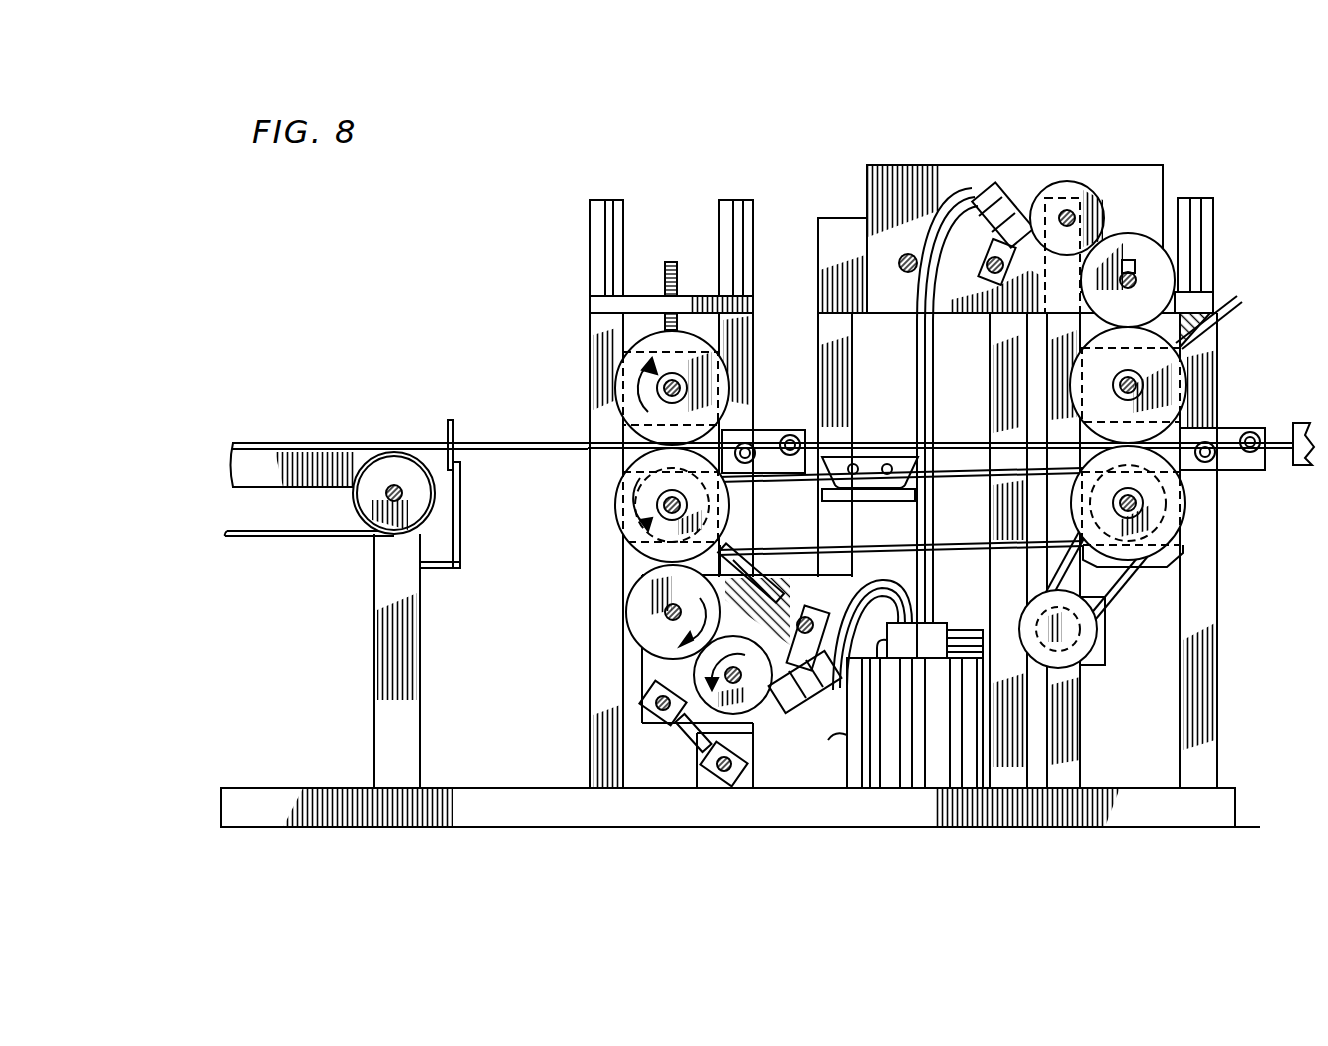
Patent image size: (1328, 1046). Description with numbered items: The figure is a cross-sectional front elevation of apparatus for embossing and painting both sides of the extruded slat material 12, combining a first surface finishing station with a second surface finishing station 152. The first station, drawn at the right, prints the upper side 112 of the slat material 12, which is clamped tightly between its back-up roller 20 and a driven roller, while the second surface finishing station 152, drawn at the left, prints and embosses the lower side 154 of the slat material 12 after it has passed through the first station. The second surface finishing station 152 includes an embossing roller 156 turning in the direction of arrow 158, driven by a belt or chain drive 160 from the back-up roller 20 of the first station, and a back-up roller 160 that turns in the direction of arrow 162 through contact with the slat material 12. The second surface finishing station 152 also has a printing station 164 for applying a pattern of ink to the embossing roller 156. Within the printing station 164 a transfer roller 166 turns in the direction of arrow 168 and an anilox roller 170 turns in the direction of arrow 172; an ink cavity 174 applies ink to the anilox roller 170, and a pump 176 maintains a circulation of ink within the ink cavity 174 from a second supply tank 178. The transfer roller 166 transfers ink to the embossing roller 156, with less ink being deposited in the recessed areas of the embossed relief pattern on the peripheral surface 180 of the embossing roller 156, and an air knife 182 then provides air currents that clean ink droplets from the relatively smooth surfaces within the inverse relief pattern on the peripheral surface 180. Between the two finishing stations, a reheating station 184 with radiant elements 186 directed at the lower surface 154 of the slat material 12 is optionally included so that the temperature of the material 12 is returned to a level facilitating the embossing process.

The extruded slat material 12 is at (1280, 445).
The back-up roller 20 is at (1192, 524).
The upper side 112 is at (972, 445).
The second surface finishing station 152 is at (710, 689).
The lower side 154 is at (966, 447).
The embossing roller 156 is at (617, 505).
The arrow 158 is at (640, 478).
The belt or chain drive 160 is at (624, 392).
The arrow 162 is at (645, 372).
The printing station 164 is at (633, 696).
The transfer roller 166 is at (636, 575).
The arrow 168 is at (627, 645).
The anilox roller 170 is at (765, 706).
The arrow 172 is at (750, 713).
The ink cavity 174 is at (787, 712).
The pump 176 is at (878, 645).
The second supply tank 178 is at (829, 742).
The peripheral surface 180 is at (622, 527).
The air knife 182 is at (747, 592).
The reheating station 184 is at (865, 492).
The radiant elements 186 is at (860, 462).